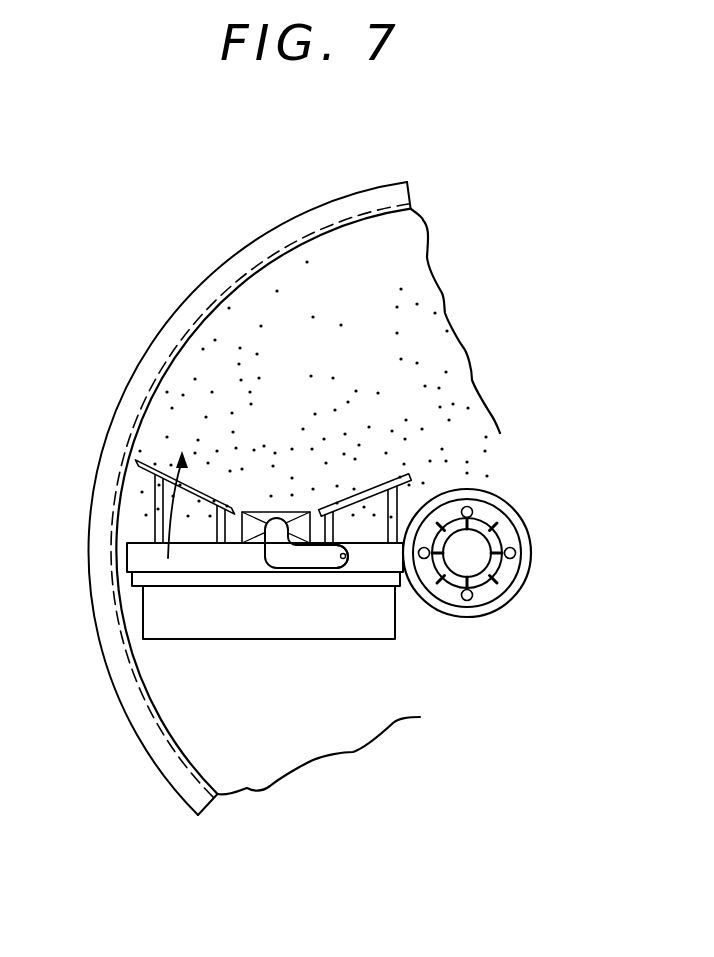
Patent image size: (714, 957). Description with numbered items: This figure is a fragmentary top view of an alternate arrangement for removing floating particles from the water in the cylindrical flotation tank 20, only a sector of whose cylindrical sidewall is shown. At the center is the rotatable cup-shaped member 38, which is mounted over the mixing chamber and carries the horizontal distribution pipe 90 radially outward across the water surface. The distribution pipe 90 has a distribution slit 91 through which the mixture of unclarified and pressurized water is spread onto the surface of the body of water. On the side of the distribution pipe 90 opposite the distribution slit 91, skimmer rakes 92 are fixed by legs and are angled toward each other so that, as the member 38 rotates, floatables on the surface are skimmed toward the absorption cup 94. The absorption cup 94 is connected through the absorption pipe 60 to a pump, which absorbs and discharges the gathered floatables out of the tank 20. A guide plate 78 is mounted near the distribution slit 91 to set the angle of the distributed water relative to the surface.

The flotation tank 20 is at (177, 728).
The cup-shaped member 38 is at (512, 514).
The absorption pipe 60 is at (345, 562).
The guide plate 78 is at (307, 625).
The distribution pipe 90 is at (133, 560).
The distribution slit 91 is at (187, 583).
The skimmer rakes 92 is at (197, 490).
The absorption cup 94 is at (250, 535).